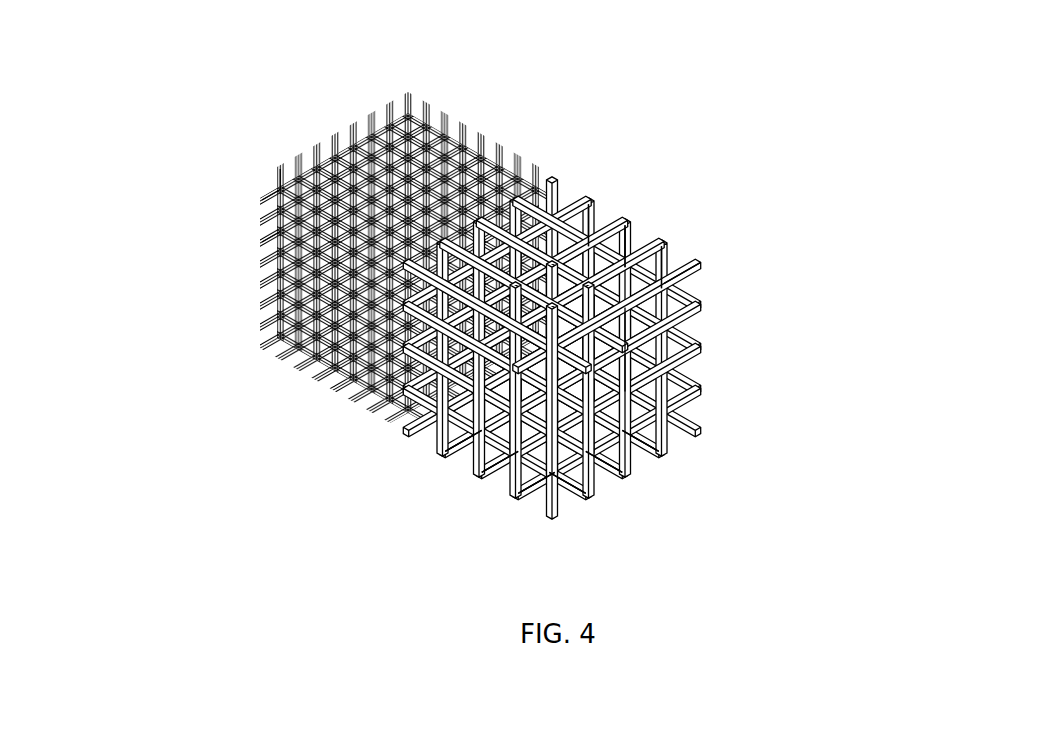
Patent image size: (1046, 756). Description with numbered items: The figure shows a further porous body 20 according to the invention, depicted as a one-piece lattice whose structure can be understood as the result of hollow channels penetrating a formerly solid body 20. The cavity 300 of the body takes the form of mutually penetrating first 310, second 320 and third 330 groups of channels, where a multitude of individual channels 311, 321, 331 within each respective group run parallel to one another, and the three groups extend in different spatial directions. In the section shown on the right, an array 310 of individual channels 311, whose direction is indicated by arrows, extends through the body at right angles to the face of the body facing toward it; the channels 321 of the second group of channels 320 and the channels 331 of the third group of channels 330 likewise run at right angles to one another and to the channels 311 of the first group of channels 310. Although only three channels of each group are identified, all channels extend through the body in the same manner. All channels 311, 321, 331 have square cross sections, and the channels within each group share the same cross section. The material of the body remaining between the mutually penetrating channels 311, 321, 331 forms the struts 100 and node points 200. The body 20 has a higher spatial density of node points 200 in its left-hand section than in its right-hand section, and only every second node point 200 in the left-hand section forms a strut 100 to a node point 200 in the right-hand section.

The body 20 is at (228, 390).
The strut 100 is at (272, 193).
The node point 200 is at (281, 183).
The cavity 300 is at (275, 238).
The first group of channels 310 is at (328, 488).
The channel 311 is at (540, 497).
The second group of channels 320 is at (783, 490).
The channel 321 is at (603, 475).
The third group of channels 330 is at (578, 67).
The channel 331 is at (605, 212).